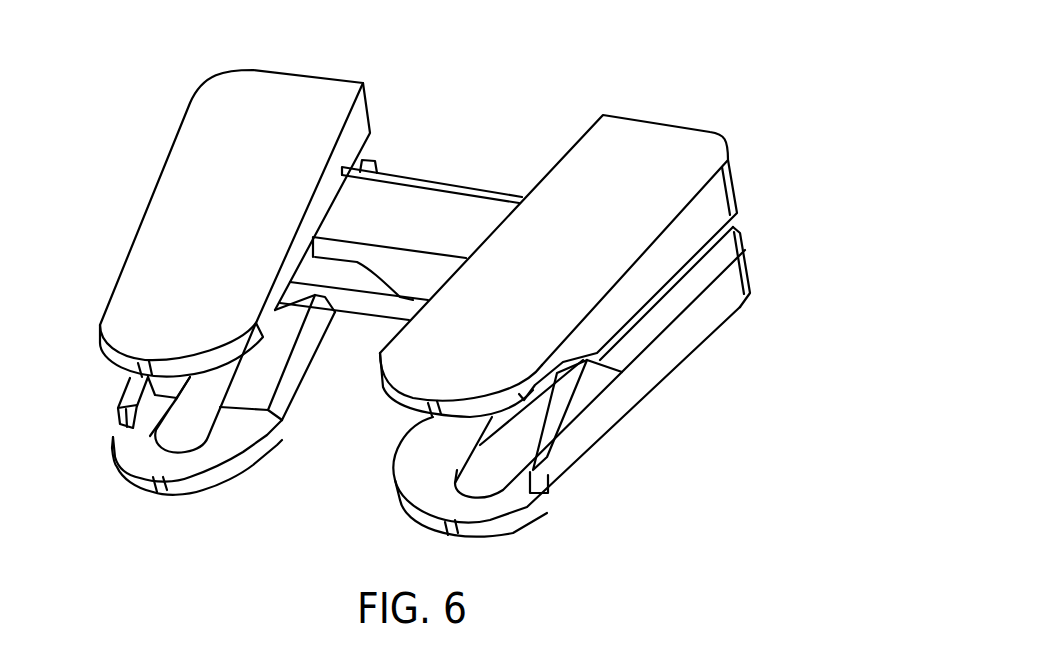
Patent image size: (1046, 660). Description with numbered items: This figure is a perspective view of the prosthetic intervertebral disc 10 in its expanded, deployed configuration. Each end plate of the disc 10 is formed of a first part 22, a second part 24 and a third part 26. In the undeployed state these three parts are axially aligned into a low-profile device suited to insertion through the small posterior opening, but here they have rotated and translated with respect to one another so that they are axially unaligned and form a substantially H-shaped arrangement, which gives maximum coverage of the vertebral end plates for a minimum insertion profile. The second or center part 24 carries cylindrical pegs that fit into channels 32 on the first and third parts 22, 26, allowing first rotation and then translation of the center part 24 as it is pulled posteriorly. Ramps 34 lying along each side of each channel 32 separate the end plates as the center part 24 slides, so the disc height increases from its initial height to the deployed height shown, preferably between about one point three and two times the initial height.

The prosthetic intervertebral disc 10 is at (672, 50).
The first part 22 is at (668, 135).
The second part 24 is at (420, 200).
The third part 26 is at (290, 87).
The channel 32 is at (187, 443).
The ramp 34 is at (263, 380).